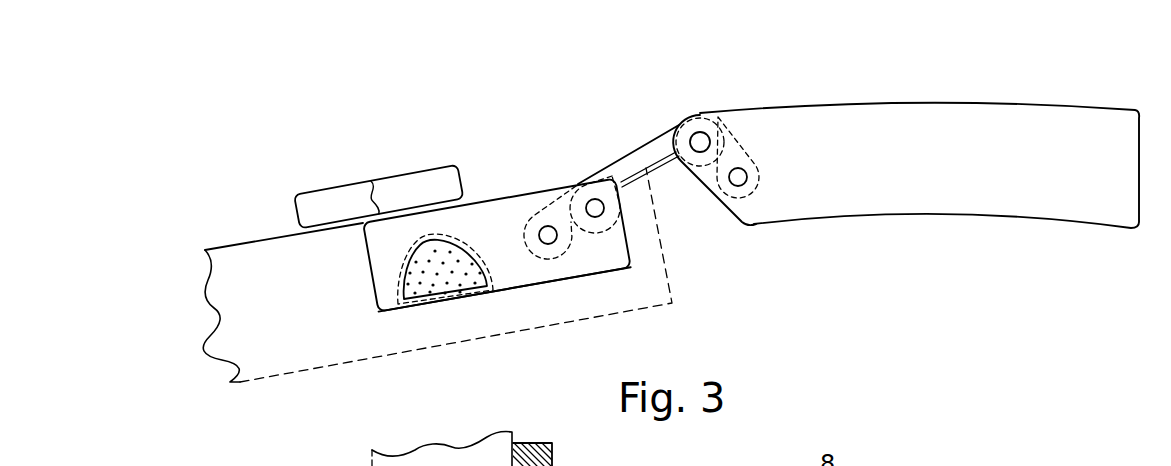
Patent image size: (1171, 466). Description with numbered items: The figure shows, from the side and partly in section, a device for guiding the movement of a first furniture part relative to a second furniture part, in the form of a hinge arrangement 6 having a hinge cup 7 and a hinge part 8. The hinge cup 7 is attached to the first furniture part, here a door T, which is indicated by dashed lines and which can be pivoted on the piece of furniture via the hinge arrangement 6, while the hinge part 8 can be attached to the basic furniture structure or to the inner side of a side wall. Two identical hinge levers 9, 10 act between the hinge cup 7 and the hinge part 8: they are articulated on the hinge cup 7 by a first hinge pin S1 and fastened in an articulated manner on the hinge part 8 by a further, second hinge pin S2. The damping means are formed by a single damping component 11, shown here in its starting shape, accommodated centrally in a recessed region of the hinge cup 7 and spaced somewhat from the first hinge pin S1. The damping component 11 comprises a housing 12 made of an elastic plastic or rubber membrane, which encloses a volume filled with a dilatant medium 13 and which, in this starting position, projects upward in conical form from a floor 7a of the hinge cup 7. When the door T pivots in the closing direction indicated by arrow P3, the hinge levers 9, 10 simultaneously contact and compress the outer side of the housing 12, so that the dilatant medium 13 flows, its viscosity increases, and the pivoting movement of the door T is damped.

The door T is at (258, 365).
The arrow P3 is at (452, 108).
The housing 12 is at (470, 240).
The hinge cup 7 is at (377, 322).
The floor 7a is at (512, 289).
The damping component 11 is at (388, 259).
The dilatant medium 13 is at (441, 290).
The first hinge pin S1 is at (549, 235).
The hinge lever 9 is at (637, 152).
The hinge arrangement 6 is at (752, 90).
The hinge part 8 is at (1076, 98).
The hinge lever 10 is at (660, 153).
The second hinge pin S2 is at (700, 137).